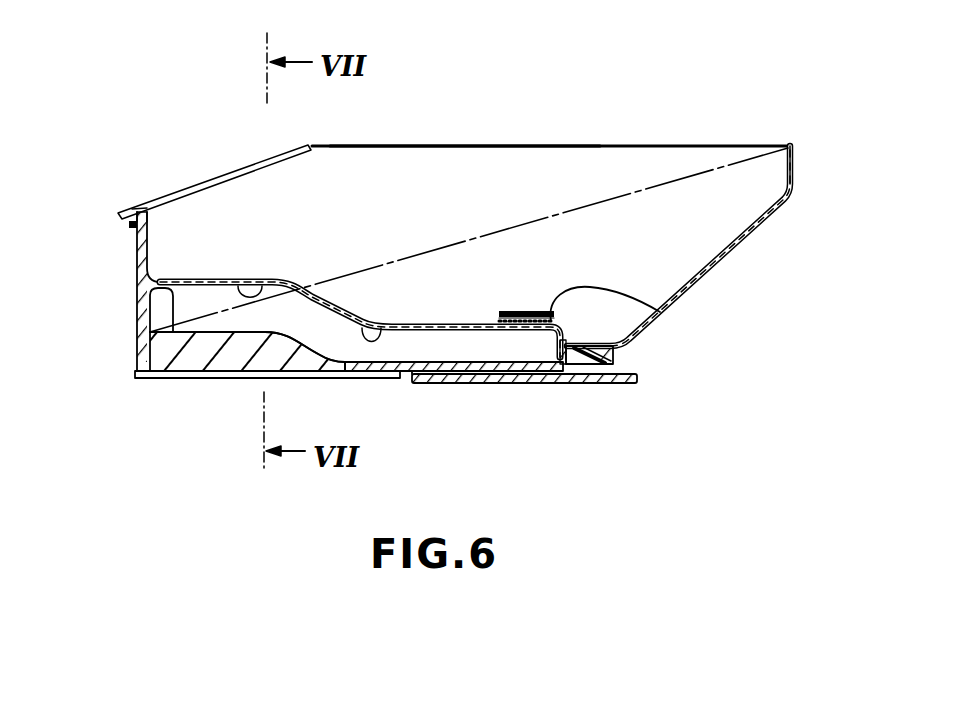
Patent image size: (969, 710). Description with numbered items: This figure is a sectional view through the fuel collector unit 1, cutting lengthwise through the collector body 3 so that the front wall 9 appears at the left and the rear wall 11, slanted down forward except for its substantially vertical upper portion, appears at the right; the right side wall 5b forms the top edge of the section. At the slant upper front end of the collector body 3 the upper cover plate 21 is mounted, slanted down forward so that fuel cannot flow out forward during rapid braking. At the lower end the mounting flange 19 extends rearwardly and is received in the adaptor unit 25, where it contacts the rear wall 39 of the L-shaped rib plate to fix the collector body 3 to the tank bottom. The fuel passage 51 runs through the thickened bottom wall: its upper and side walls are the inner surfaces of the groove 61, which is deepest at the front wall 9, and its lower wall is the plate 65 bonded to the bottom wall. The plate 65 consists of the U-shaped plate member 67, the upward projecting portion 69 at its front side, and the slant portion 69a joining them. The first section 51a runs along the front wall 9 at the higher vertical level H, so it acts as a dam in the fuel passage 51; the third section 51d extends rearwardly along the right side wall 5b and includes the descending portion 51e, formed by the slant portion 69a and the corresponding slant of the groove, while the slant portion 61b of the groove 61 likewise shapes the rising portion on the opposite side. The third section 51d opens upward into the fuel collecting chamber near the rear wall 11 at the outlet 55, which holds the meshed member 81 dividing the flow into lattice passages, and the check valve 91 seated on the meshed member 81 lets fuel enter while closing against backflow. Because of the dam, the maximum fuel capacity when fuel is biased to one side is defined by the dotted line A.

The fuel collector unit 1 is at (794, 141).
The collector body 3 is at (719, 139).
The right side wall 5b is at (457, 160).
The front wall 9 is at (137, 251).
The rear wall 11 is at (756, 224).
The mounting flange 19 is at (611, 380).
The upper cover plate 21 is at (205, 175).
The adaptor unit 25 is at (637, 380).
The rear wall of L-shaped rib plate 39 is at (615, 362).
The fuel passage 51 is at (227, 318).
The first section of fuel passage 51a is at (162, 316).
The third section of fuel passage 51d is at (424, 352).
The descending portion 51e is at (322, 348).
The outlet of fuel passage 55 is at (505, 335).
The groove 61 is at (262, 290).
The slant portion of groove 61b is at (377, 325).
The plate 65 is at (346, 376).
The plate member 67 is at (427, 378).
The upward projecting portion 69 is at (250, 350).
The slant portion of plate 69a is at (310, 332).
The meshed member 81 is at (537, 337).
The check valve 91 is at (655, 307).
The dotted line A is at (603, 200).
The vertical level H is at (196, 303).